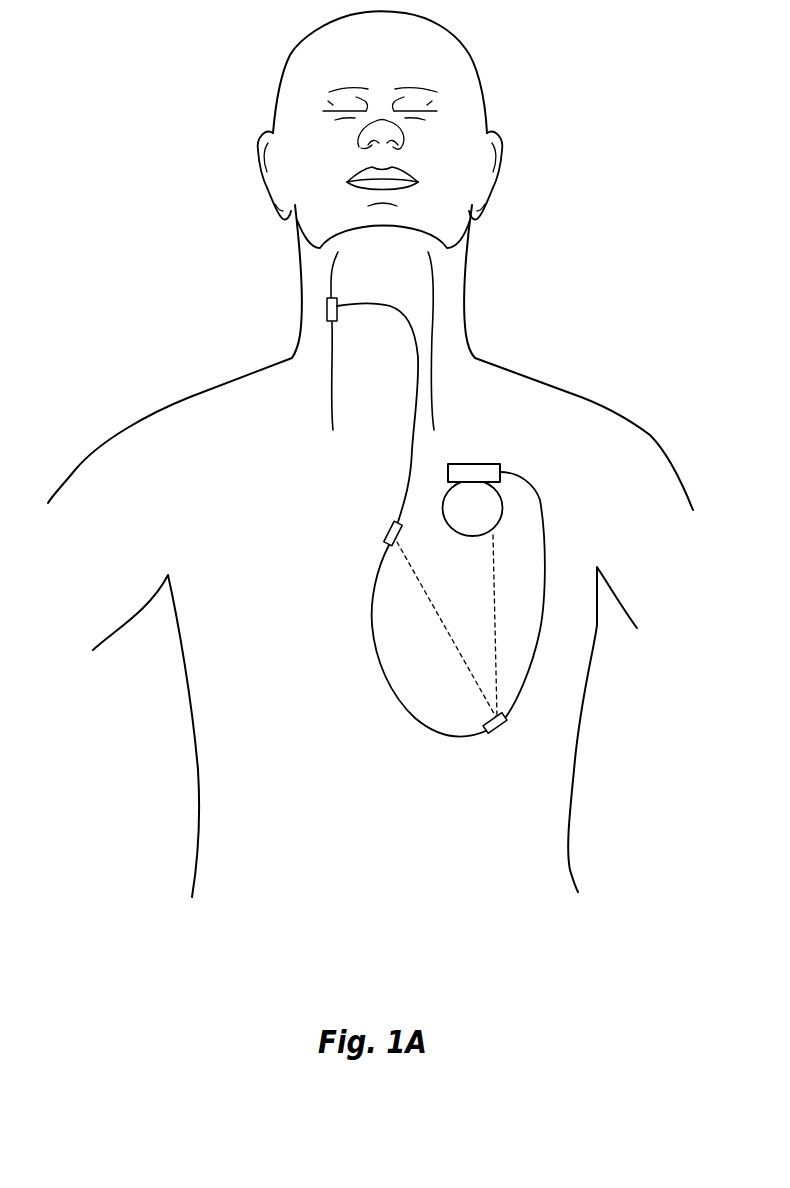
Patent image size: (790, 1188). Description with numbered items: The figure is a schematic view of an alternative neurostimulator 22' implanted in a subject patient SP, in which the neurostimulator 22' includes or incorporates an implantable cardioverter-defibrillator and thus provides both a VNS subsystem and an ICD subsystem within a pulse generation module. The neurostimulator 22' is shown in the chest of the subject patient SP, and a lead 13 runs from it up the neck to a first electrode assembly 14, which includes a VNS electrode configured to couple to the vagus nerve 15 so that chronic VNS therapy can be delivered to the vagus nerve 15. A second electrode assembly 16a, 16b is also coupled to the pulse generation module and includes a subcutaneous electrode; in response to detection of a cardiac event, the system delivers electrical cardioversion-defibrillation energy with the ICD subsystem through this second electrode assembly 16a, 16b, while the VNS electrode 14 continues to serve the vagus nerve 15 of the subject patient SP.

The subject patient SP is at (476, 68).
The vagus nerve 15 is at (330, 278).
The first electrode assembly 14 is at (326, 310).
The lead 13 is at (410, 448).
The second electrode assembly 16b is at (388, 528).
The second electrode assembly 16a is at (503, 731).
The neurostimulator 22' is at (517, 500).